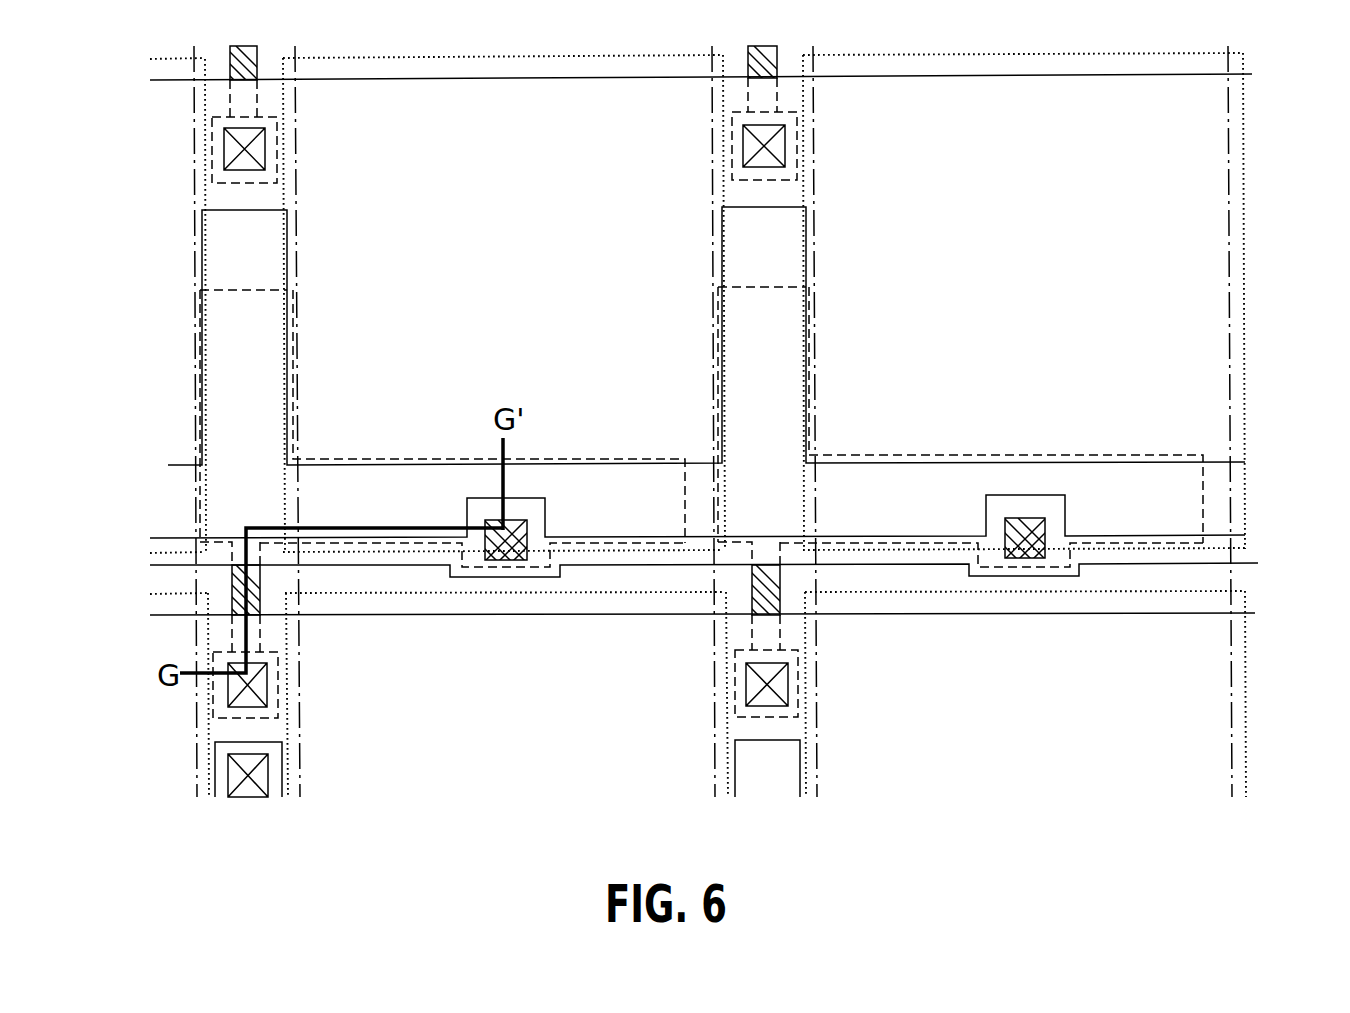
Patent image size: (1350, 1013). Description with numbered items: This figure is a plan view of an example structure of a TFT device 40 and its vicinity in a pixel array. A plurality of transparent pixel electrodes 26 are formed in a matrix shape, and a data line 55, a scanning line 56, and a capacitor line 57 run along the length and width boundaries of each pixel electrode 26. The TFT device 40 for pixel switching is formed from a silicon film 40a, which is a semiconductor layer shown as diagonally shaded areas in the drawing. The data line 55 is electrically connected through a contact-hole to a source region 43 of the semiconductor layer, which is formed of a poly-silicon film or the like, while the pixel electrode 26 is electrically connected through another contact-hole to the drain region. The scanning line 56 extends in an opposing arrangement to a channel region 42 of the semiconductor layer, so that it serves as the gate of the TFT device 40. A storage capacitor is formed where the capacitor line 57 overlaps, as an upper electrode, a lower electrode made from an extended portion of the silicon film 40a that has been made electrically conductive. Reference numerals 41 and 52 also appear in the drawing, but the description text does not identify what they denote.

The transparent pixel electrode 26 is at (1245, 252).
The TFT device 40 is at (686, 646).
The silicon film 40a is at (295, 283).
The thin film transistor 41 is at (1048, 540).
The channel region 42 is at (785, 600).
The source region 43 is at (788, 693).
The scanning line 52 is at (1195, 580).
The data line 55 is at (297, 710).
The scanning line 56 is at (505, 614).
The capacitor line 57 is at (1075, 455).